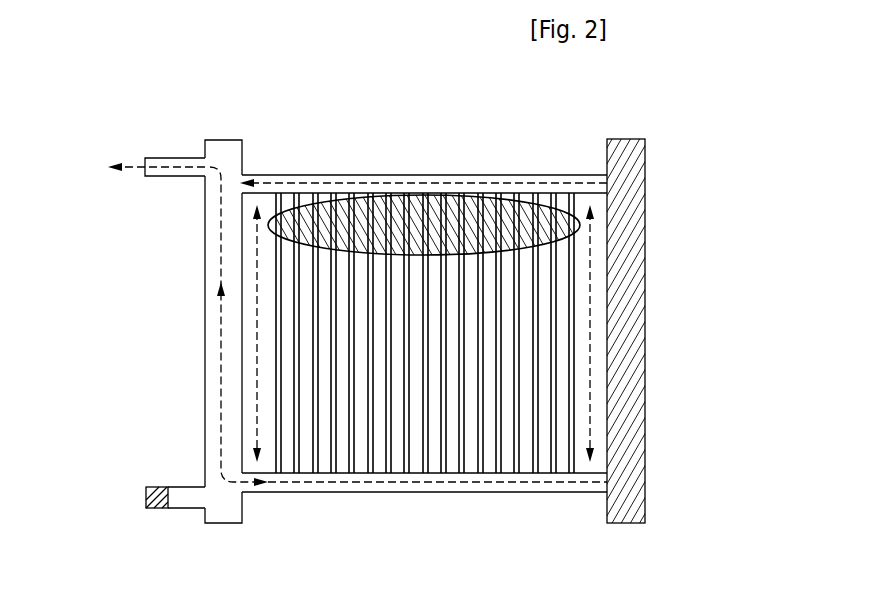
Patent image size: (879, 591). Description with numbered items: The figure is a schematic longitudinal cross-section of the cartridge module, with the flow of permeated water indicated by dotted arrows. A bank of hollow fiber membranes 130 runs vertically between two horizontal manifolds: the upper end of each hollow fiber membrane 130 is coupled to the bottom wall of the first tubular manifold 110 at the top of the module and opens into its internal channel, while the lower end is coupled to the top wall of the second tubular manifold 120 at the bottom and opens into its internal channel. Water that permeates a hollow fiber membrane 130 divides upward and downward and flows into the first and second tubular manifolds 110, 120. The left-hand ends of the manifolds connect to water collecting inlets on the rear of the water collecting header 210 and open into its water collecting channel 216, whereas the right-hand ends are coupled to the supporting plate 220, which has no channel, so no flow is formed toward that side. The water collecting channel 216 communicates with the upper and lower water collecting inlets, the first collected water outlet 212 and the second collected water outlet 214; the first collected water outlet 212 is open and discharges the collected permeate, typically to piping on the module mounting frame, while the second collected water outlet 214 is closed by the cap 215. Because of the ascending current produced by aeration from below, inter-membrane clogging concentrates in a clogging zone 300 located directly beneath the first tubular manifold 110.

The first tubular manifold 110 is at (338, 175).
The second tubular manifold 120 is at (402, 493).
The hollow fiber membrane 130 is at (548, 458).
The water collecting header 210 is at (225, 140).
The first collected water outlet 212 is at (172, 158).
The second collected water outlet 214 is at (187, 504).
The cap 215 is at (150, 497).
The water collecting channel 216 is at (215, 350).
The supporting plate 220 is at (600, 330).
The clogging zone 300 is at (445, 212).